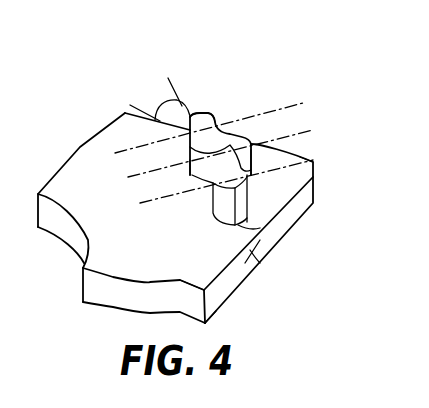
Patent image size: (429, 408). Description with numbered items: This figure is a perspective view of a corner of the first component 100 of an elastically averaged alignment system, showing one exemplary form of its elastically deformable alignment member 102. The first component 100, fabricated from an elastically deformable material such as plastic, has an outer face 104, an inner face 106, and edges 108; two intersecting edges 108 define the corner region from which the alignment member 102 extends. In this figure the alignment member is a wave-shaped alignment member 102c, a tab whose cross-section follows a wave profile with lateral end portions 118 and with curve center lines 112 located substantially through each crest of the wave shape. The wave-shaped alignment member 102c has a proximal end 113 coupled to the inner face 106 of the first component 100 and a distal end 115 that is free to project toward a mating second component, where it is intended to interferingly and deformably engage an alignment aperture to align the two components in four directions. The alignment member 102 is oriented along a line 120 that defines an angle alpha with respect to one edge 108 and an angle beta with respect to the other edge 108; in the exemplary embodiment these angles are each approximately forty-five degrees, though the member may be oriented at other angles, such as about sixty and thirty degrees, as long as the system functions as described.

The first component 100 is at (207, 294).
The elastically deformable alignment member 102 is at (249, 103).
The wave-shaped alignment member 102c is at (191, 176).
The outer face 104 is at (216, 304).
The inner face 106 is at (200, 278).
The edge 108 is at (145, 117).
The curve center line 112 is at (320, 157).
The proximal end 113 is at (189, 151).
The distal end 115 is at (314, 165).
The end portion 118 is at (204, 114).
The line 120 is at (182, 108).